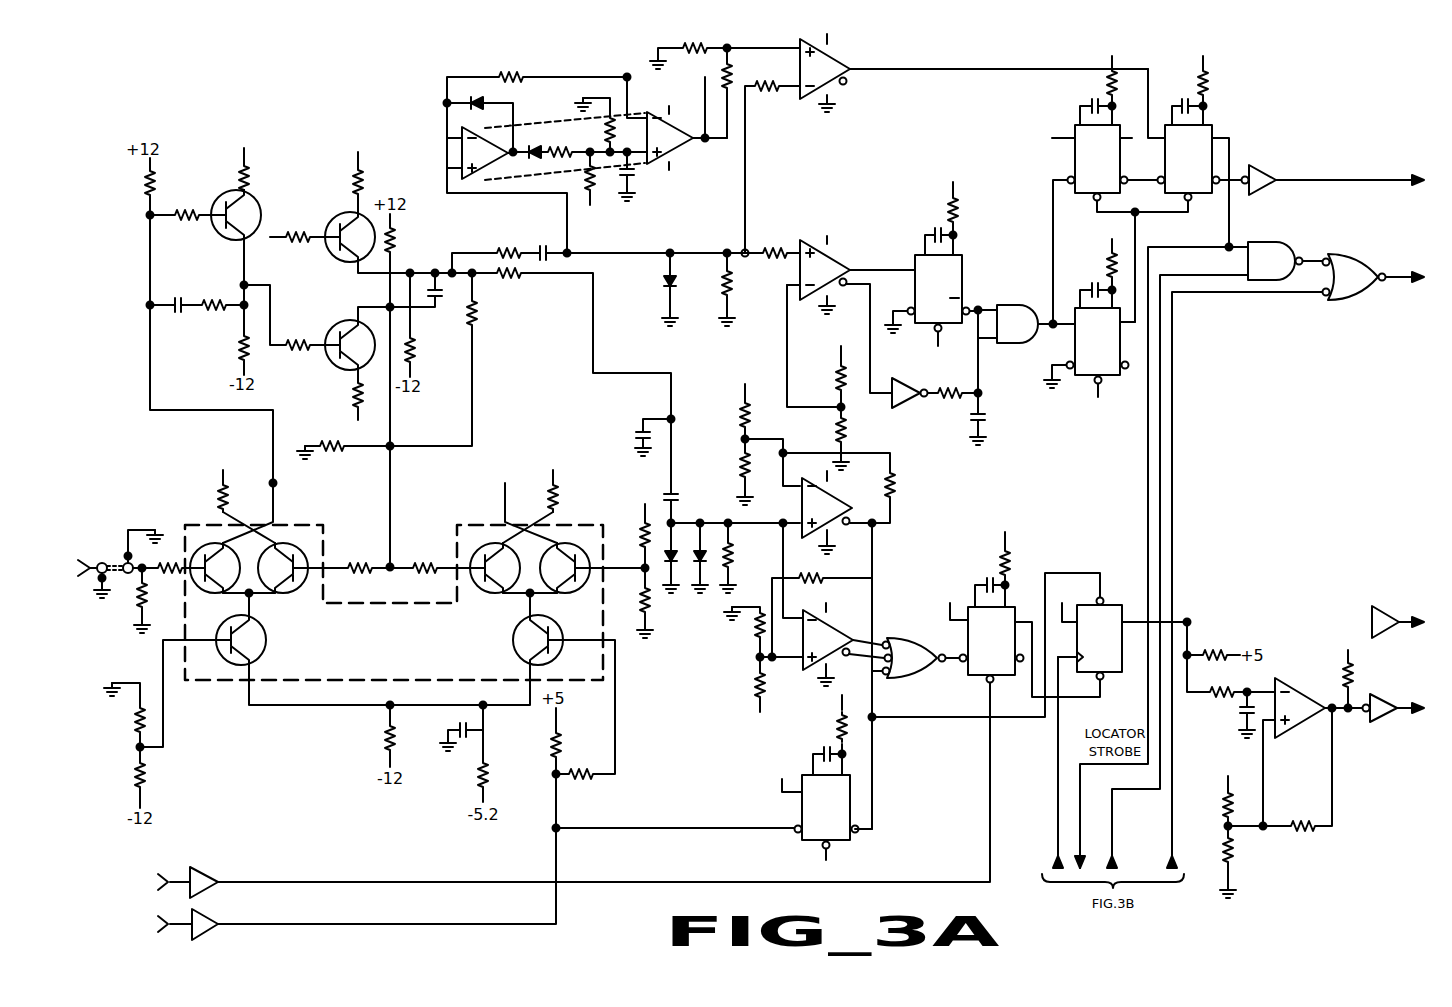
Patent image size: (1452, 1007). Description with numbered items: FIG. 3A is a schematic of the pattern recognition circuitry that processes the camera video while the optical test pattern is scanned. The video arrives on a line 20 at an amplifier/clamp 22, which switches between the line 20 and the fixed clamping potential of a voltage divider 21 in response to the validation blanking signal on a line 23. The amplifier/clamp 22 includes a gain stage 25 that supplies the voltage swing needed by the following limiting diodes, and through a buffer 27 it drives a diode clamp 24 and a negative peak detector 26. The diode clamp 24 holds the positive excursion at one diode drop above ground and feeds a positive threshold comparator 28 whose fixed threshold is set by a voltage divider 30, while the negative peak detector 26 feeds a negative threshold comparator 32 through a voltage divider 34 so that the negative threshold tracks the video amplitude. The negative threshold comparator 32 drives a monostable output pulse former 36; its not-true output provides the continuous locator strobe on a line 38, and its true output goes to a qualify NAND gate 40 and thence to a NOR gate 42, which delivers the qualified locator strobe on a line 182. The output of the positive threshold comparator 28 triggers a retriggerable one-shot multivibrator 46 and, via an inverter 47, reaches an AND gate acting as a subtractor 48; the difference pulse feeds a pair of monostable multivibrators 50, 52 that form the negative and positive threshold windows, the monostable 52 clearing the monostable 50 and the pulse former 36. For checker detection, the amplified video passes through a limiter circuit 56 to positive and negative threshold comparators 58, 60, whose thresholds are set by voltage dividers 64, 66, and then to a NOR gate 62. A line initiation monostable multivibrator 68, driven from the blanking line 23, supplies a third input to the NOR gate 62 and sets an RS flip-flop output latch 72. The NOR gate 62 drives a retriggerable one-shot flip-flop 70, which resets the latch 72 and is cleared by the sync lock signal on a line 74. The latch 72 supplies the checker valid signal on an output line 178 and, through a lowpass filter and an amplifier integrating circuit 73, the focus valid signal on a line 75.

The input line 20 is at (100, 576).
The voltage divider 21 is at (634, 558).
The amplifier/clamp 22 is at (455, 466).
The validation blanking signal line 23 is at (176, 920).
The diode clamp 24 is at (698, 244).
The gain stage 25 is at (272, 186).
The negative peak detector 26 is at (556, 94).
The buffer 27 is at (410, 252).
The positive threshold comparator 28 is at (851, 264).
The voltage divider 30 is at (854, 414).
The negative threshold comparator 32 is at (852, 61).
The voltage divider 34 is at (730, 41).
The output pulse former 36 is at (1212, 129).
The locator strobe output line 38 is at (1382, 175).
The qualify NAND gate 40 is at (1272, 243).
The NOR gate 42 is at (1342, 258).
The retriggerable one-shot multivibrator 46 is at (963, 275).
The inverter 47 is at (906, 378).
The subtractor 48 is at (1022, 308).
The monostable multivibrator 50 is at (1074, 131).
The monostable multivibrator 52 is at (1068, 306).
The limiter circuit 56 is at (695, 512).
The positive threshold comparator 58 is at (850, 505).
The negative threshold comparator 60 is at (838, 628).
The NOR gate 62 is at (911, 645).
The voltage divider 64 is at (736, 429).
The voltage divider 66 is at (748, 658).
The line initiation monostable multivibrator 68 is at (800, 807).
The retriggerable one-shot flip-flop 70 is at (1016, 612).
The RS flip-flop output latch 72 is at (1113, 612).
The amplifier integrating circuit 73 is at (1318, 693).
The sync lock line 74 is at (178, 878).
The focus valid output line 75 is at (1405, 714).
The checker valid output line 178 is at (1405, 628).
The qualified locator strobe line 182 is at (1398, 266).